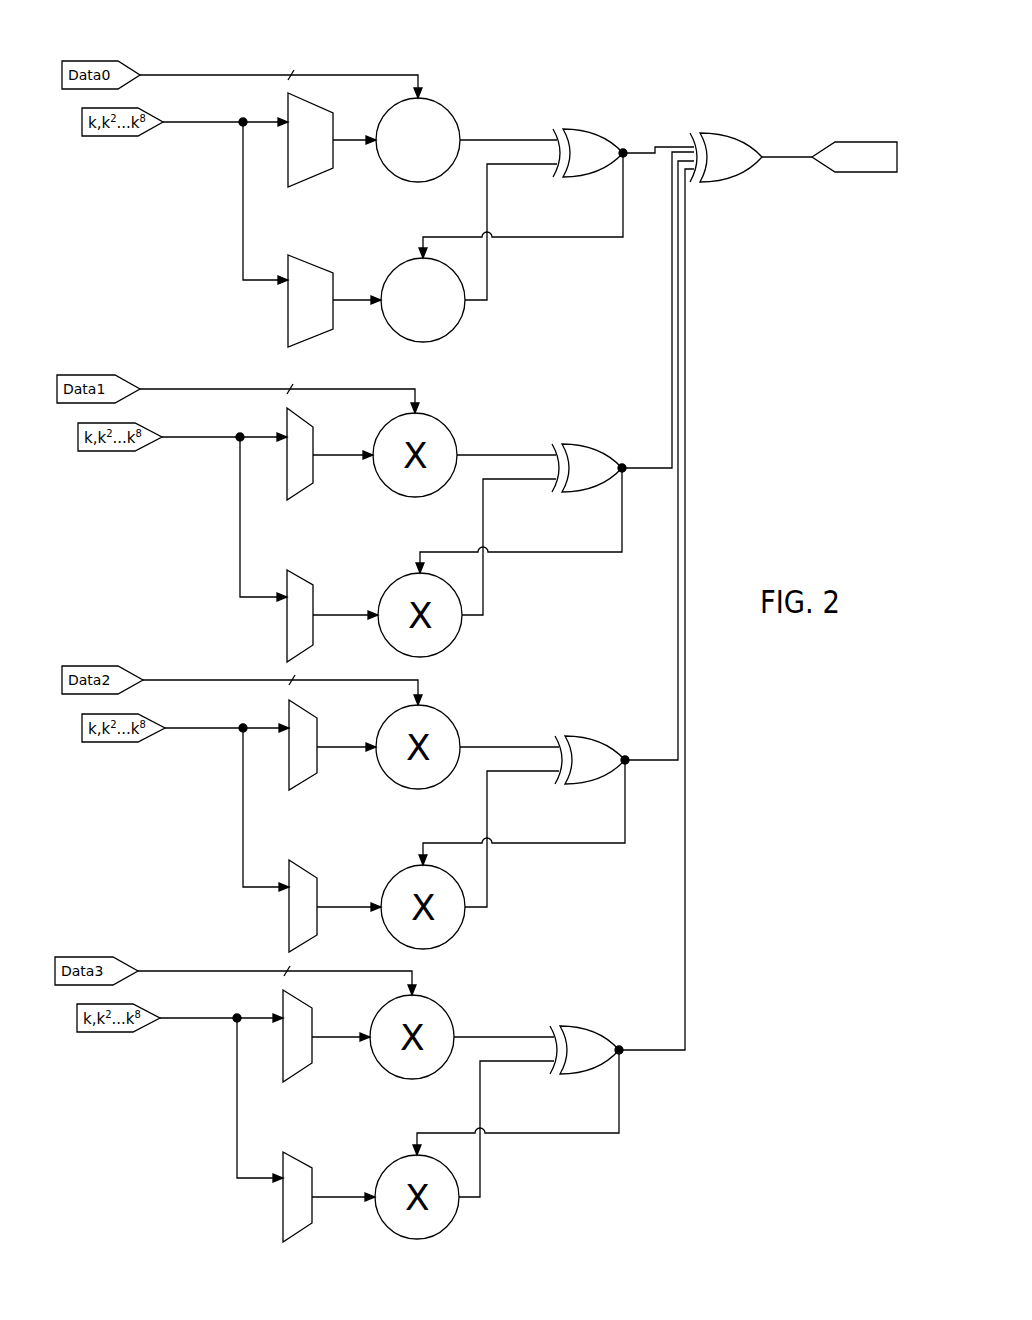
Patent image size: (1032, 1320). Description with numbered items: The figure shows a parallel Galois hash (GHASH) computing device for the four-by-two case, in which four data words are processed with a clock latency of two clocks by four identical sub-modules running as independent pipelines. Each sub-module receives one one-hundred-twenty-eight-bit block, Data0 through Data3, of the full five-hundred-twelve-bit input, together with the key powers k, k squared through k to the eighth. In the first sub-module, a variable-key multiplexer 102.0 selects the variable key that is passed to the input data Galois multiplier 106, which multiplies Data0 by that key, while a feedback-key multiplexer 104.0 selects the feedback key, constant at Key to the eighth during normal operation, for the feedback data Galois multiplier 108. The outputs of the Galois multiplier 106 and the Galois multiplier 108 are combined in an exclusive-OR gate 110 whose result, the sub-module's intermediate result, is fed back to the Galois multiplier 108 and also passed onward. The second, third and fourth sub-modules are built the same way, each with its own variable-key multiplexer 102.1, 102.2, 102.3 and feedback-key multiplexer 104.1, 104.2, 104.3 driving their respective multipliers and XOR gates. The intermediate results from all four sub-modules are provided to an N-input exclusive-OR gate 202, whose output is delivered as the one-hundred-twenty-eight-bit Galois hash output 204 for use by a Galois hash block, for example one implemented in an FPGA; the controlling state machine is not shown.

The multiplexer 102.0 is at (317, 105).
The multiplexer 104.0 is at (308, 263).
The Galois multiplier 106 is at (445, 108).
The Galois multiplier 108 is at (400, 338).
The exclusive-OR gate 110 is at (603, 133).
The multiplexer 102.1 is at (295, 413).
The multiplexer 104.1 is at (305, 575).
The multiplexer 102.2 is at (302, 708).
The multiplexer 104.2 is at (307, 872).
The multiplexer 102.3 is at (297, 1000).
The multiplexer 104.3 is at (297, 1158).
The exclusive-OR gate 202 is at (743, 140).
The GHASH output 204 is at (853, 142).